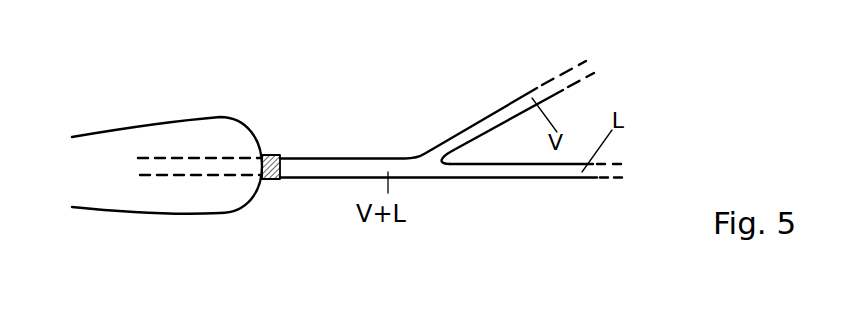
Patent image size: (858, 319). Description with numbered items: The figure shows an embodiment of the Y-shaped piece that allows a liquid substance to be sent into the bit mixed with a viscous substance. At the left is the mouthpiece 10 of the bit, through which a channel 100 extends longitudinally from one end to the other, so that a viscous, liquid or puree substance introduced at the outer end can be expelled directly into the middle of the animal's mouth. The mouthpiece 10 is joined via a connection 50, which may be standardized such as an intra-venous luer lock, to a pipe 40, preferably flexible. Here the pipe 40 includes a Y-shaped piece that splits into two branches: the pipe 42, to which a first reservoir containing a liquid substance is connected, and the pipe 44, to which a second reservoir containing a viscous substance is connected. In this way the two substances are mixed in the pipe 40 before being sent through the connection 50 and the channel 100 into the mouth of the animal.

The mouthpiece 10 is at (182, 135).
The channel 100 is at (167, 167).
The connection 50 is at (272, 155).
The pipe 40 is at (338, 165).
The pipe of the Y-shaped connection 42 is at (507, 110).
The pipe of the Y-shaped connection 44 is at (492, 172).